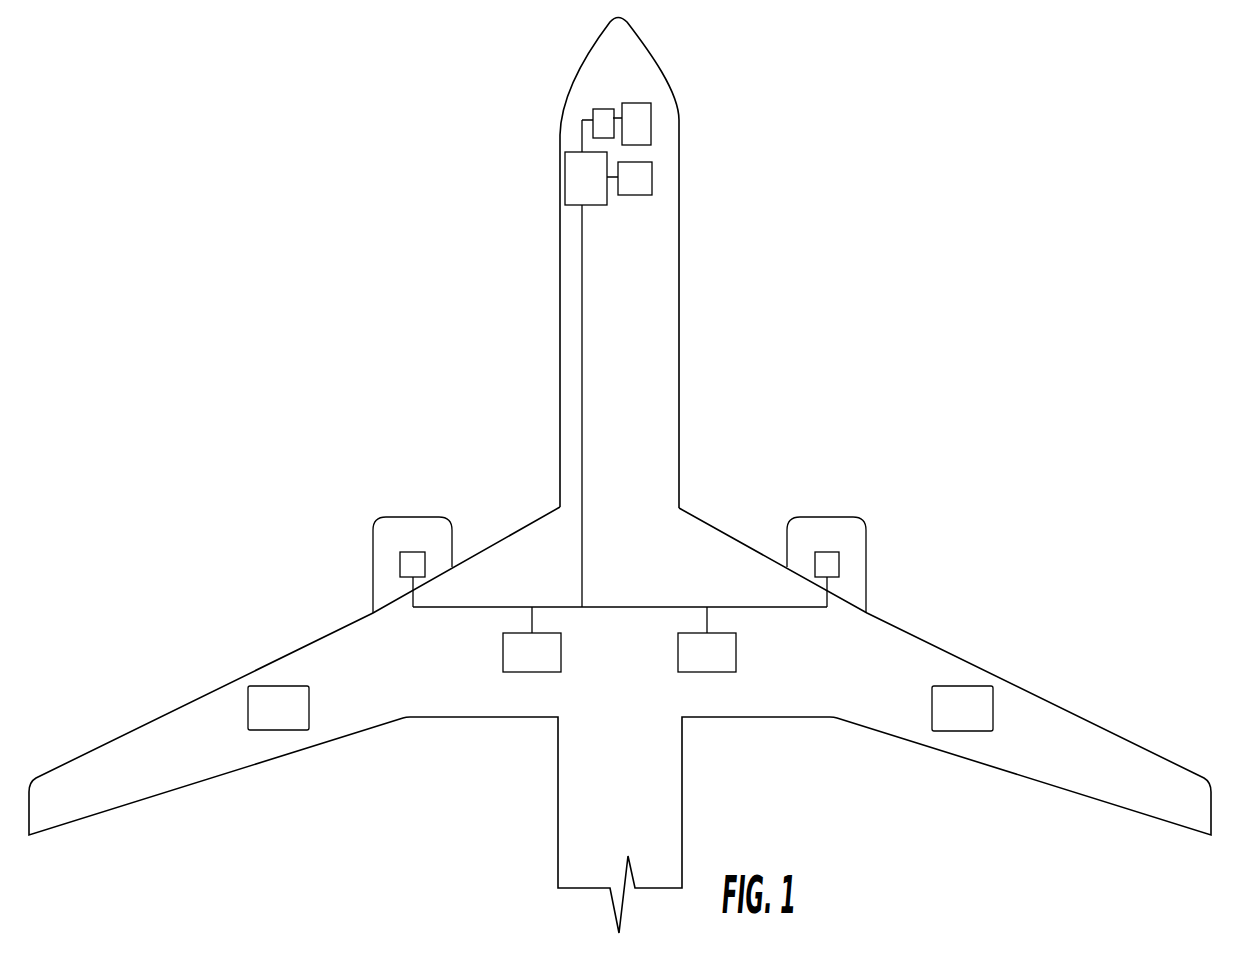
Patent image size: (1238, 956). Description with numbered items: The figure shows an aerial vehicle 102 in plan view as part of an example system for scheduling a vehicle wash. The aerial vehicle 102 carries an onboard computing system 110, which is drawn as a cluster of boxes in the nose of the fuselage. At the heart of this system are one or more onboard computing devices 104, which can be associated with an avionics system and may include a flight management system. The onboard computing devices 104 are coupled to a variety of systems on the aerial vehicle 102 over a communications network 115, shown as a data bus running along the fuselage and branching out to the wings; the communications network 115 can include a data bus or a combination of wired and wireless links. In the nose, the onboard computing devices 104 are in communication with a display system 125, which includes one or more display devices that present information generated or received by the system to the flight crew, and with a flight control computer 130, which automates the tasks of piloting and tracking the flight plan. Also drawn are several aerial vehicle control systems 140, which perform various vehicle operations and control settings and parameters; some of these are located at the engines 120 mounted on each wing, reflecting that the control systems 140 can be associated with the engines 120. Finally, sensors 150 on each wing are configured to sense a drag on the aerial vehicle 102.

The onboard computing system 110 is at (857, 158).
The aerial vehicle 102 is at (661, 332).
The onboard computing device 104 is at (565, 174).
The communications network 115 is at (582, 380).
The engine 120 is at (440, 527).
The display system 125 is at (640, 103).
The flight control computer 130 is at (602, 109).
The aerial vehicle control system 140 is at (653, 176).
The sensor 150 is at (297, 722).